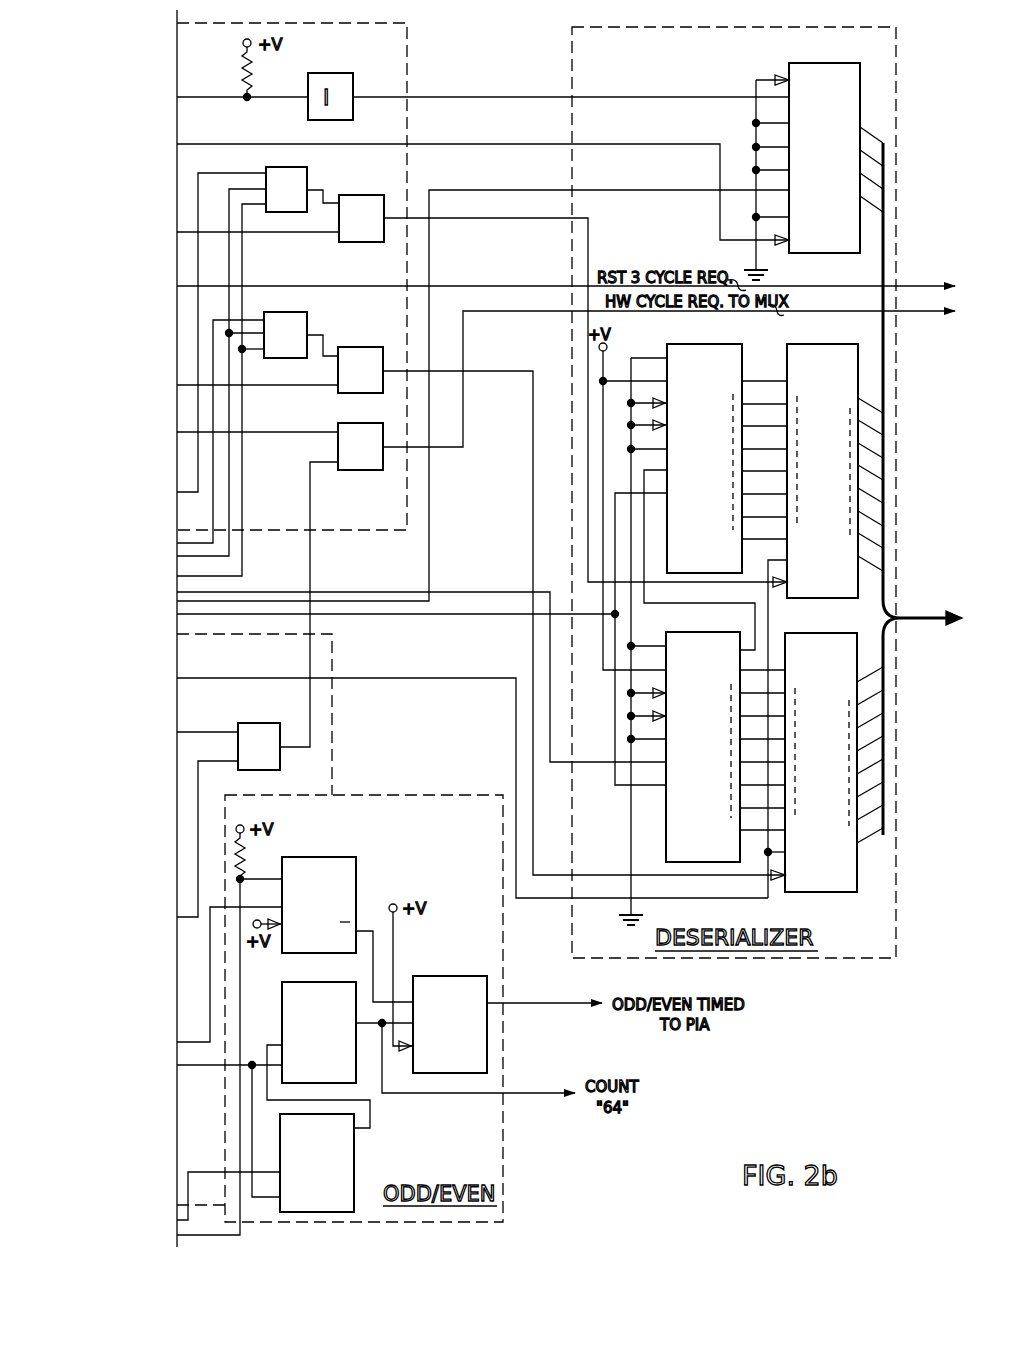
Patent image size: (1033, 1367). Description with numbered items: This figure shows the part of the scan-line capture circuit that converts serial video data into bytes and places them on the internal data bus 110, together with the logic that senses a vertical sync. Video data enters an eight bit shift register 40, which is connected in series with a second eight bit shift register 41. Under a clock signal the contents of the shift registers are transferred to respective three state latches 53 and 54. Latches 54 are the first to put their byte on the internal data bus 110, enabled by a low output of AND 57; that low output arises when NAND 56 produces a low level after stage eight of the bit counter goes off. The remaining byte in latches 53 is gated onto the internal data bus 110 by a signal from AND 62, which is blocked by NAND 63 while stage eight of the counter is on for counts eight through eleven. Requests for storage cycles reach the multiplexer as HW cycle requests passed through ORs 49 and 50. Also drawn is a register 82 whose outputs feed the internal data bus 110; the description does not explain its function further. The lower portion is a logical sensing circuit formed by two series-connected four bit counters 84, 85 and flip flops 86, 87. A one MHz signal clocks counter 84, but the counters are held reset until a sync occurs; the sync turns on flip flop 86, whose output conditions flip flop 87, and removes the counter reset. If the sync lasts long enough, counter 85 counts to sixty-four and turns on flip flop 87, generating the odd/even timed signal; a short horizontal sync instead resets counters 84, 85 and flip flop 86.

The NAND 56 is at (307, 171).
The AND 57 is at (366, 195).
The NAND 63 is at (307, 316).
The AND 62 is at (363, 347).
The OR 50 is at (370, 423).
The OR 49 is at (262, 723).
The flip flop 86 is at (330, 857).
The four bit counter 85 is at (325, 982).
The flip flop 87 is at (448, 976).
The four bit counter 84 is at (354, 1152).
The register 82 is at (860, 70).
The 8 bit shift register 41 is at (707, 344).
The three state latches 54 is at (827, 344).
The 8 bit shift register 40 is at (705, 632).
The three state latches 53 is at (825, 633).
The internal data bus 110 is at (928, 613).